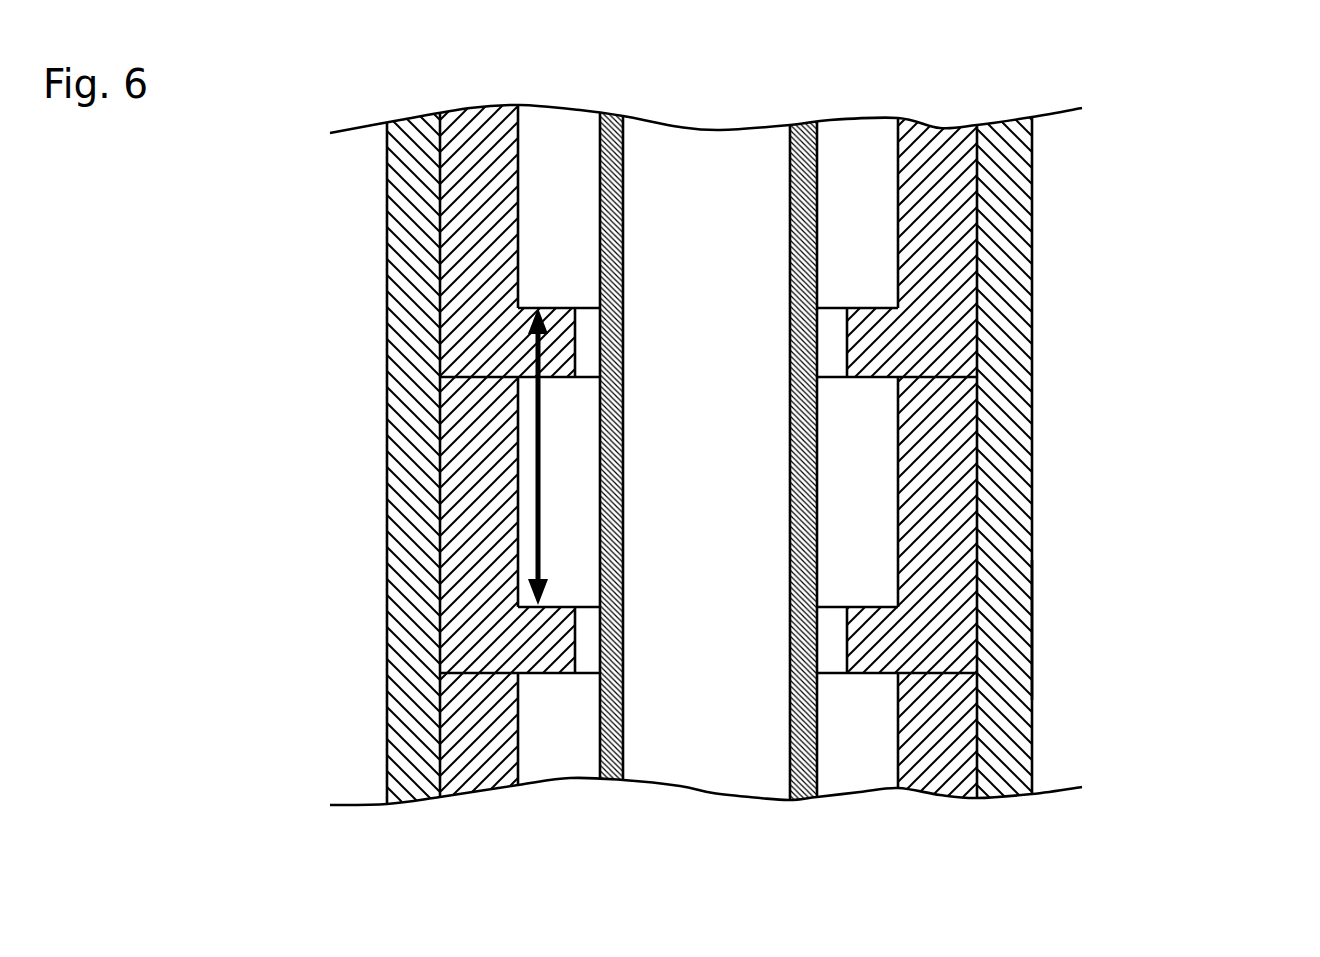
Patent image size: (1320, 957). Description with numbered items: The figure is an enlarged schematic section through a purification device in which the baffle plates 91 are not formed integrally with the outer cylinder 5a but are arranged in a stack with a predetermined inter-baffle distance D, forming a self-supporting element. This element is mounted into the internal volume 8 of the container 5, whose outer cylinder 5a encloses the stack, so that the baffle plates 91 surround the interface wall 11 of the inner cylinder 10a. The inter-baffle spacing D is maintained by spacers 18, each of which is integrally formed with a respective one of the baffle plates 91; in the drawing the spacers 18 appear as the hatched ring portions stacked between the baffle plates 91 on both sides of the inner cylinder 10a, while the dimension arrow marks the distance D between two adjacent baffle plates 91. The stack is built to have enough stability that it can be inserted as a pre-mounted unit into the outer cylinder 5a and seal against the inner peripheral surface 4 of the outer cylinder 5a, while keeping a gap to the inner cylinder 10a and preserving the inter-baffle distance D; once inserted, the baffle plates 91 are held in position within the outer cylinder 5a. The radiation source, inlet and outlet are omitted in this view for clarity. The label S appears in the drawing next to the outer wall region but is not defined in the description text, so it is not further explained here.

The inner peripheral surface 4 is at (977, 523).
The container 5 is at (1000, 358).
The outer cylinder 5a is at (1000, 633).
The internal volume 8 is at (848, 152).
The inner cylinder 10a is at (797, 780).
The interface wall 11 is at (620, 120).
The spacers 18 is at (470, 270).
The baffle plates 91 is at (507, 325).
The outer structure S is at (977, 200).
The inter-baffle distance D is at (551, 456).